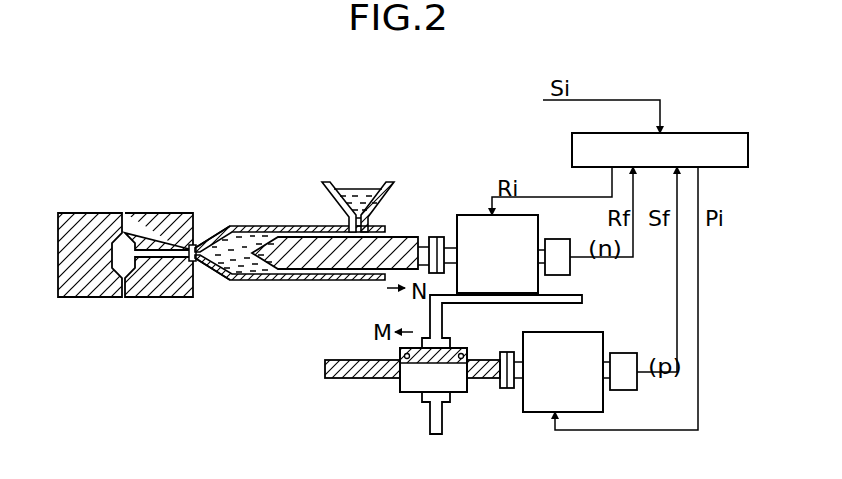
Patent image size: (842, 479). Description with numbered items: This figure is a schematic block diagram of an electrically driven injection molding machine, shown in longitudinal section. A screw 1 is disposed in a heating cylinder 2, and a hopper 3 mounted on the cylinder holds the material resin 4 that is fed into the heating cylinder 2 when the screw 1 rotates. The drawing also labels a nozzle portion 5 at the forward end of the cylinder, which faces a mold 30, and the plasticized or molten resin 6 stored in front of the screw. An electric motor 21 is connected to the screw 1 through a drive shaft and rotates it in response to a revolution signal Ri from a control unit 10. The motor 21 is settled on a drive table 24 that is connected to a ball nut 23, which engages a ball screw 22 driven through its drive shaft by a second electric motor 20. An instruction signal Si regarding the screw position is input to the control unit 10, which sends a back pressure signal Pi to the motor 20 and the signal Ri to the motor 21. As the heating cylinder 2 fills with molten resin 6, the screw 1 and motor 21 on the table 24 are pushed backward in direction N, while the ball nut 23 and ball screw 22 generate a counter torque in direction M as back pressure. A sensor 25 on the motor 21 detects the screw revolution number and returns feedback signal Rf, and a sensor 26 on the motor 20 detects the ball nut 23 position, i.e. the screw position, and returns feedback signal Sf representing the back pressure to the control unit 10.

The screw 1 is at (260, 233).
The heating cylinder 2 is at (215, 236).
The hopper 3 is at (339, 203).
The material resin 4 is at (366, 190).
The nozzle portion 5 is at (209, 262).
The molten resin 6 is at (233, 273).
The control unit 10 is at (713, 133).
The electric motor 20 is at (547, 412).
The electric motor 21 is at (469, 215).
The ball screw 22 is at (327, 381).
The ball nut 23 is at (405, 393).
The drive table 24 is at (585, 298).
The sensor 25 is at (556, 239).
The sensor 26 is at (627, 353).
The mold 30 is at (100, 213).